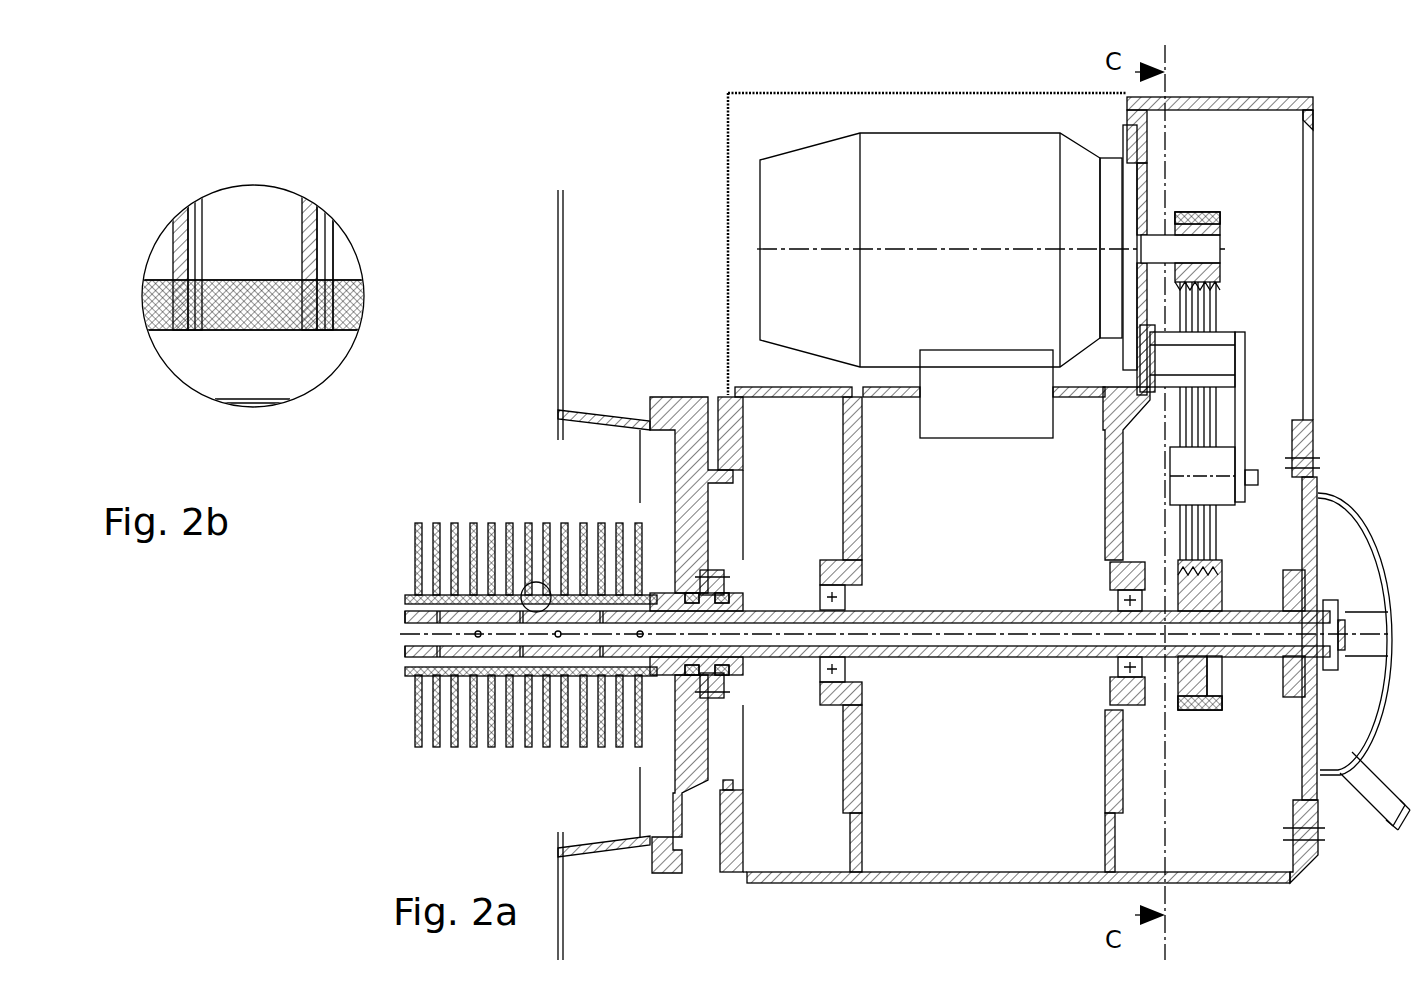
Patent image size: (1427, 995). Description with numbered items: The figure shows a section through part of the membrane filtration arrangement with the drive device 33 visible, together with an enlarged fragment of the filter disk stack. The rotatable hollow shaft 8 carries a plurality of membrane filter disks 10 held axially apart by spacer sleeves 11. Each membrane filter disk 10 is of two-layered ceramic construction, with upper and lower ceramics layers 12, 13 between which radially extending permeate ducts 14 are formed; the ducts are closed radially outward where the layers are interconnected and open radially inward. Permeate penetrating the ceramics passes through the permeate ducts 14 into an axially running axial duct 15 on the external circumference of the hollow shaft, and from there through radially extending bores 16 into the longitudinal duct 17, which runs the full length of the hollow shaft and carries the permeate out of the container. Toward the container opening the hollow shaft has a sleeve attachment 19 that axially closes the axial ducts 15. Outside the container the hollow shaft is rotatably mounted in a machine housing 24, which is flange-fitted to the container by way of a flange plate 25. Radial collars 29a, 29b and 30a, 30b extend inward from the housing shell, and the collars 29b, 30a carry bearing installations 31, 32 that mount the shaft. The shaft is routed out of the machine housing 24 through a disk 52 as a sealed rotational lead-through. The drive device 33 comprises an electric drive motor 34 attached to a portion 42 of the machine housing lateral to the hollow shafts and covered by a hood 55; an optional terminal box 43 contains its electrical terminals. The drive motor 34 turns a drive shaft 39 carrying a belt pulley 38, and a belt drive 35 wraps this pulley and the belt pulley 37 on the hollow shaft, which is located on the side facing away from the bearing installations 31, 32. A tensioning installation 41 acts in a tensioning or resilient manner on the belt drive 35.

In FIG. 2A, the hollow shaft 8 is at (1235, 613).
In FIG. 2B, the membrane filter disk 10 is at (333, 240).
In FIG. 2A, the membrane filter disk 10 is at (418, 530).
In FIG. 2B, the spacer sleeve 11 is at (238, 318).
In FIG. 2B, the ceramics layer 12 is at (327, 262).
In FIG. 2B, the ceramics layer 13 is at (307, 225).
In FIG. 2B, the permeate duct 14 is at (330, 291).
In FIG. 2B, the axial duct 15 is at (278, 358).
In FIG. 2A, the axial duct 15 is at (620, 608).
In FIG. 2A, the radially extending bore 16 is at (428, 652).
In FIG. 2A, the longitudinal duct 17 is at (489, 640).
In FIG. 2A, the sleeve attachment 19 is at (732, 597).
In FIG. 2A, the machine housing 24 is at (912, 886).
In FIG. 2A, the flange plate 25 is at (690, 470).
In FIG. 2A, the radial collar 29a is at (733, 845).
In FIG. 2A, the radial collar 29b is at (845, 785).
In FIG. 2A, the radial collar 30a is at (1113, 830).
In FIG. 2A, the radial collar 30b is at (1300, 848).
In FIG. 2A, the bearing installation 31 is at (827, 703).
In FIG. 2A, the bearing installation 32 is at (1132, 706).
In FIG. 2A, the drive device 33 is at (1005, 95).
In FIG. 2A, the drive motor 34 is at (905, 135).
In FIG. 2A, the belt drive 35 is at (1232, 296).
In FIG. 2A, the belt pulley 37 is at (1197, 700).
In FIG. 2A, the belt pulley 38 is at (1222, 218).
In FIG. 2A, the drive shaft 39 is at (1158, 243).
In FIG. 2A, the tensioning installation 41 is at (1218, 458).
In FIG. 2A, the portion of the machine housing 42 is at (1295, 98).
In FIG. 2A, the terminal box 43 is at (962, 378).
In FIG. 2A, the disk 52 is at (635, 695).
In FIG. 2A, the hood 55 is at (780, 95).